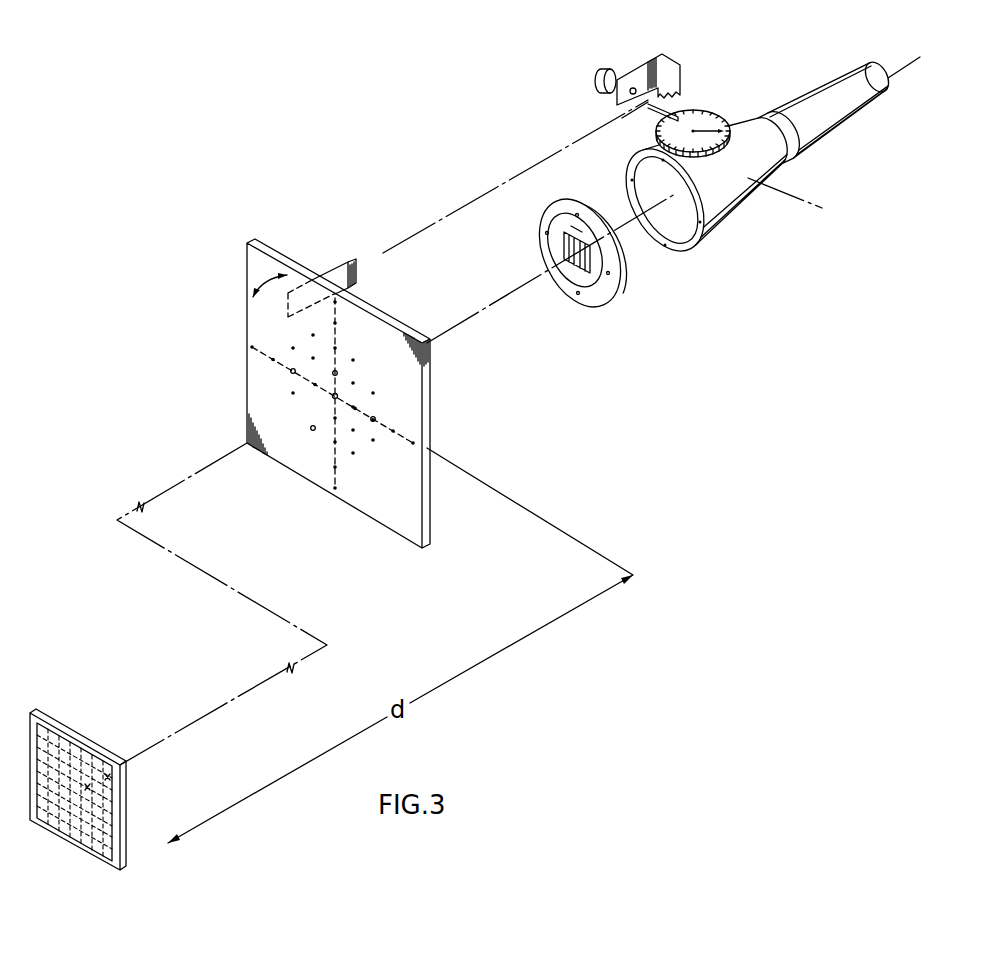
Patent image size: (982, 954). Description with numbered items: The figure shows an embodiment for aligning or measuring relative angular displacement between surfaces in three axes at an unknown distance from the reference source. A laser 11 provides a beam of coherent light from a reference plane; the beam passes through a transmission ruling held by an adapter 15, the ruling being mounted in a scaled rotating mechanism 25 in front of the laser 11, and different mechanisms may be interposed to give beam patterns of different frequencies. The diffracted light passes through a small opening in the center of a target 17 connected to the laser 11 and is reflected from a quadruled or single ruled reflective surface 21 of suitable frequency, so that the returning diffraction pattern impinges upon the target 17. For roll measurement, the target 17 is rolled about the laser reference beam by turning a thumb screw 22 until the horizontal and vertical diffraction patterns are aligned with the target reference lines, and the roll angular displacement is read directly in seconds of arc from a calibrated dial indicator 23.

The laser 11 is at (884, 97).
The adapter 15 is at (762, 176).
The target 17 is at (410, 532).
The reflective surface 21 is at (112, 872).
The thumb screw 22 is at (609, 70).
The dial indicator 23 is at (703, 112).
The scaled rotating mechanism 25 is at (606, 287).